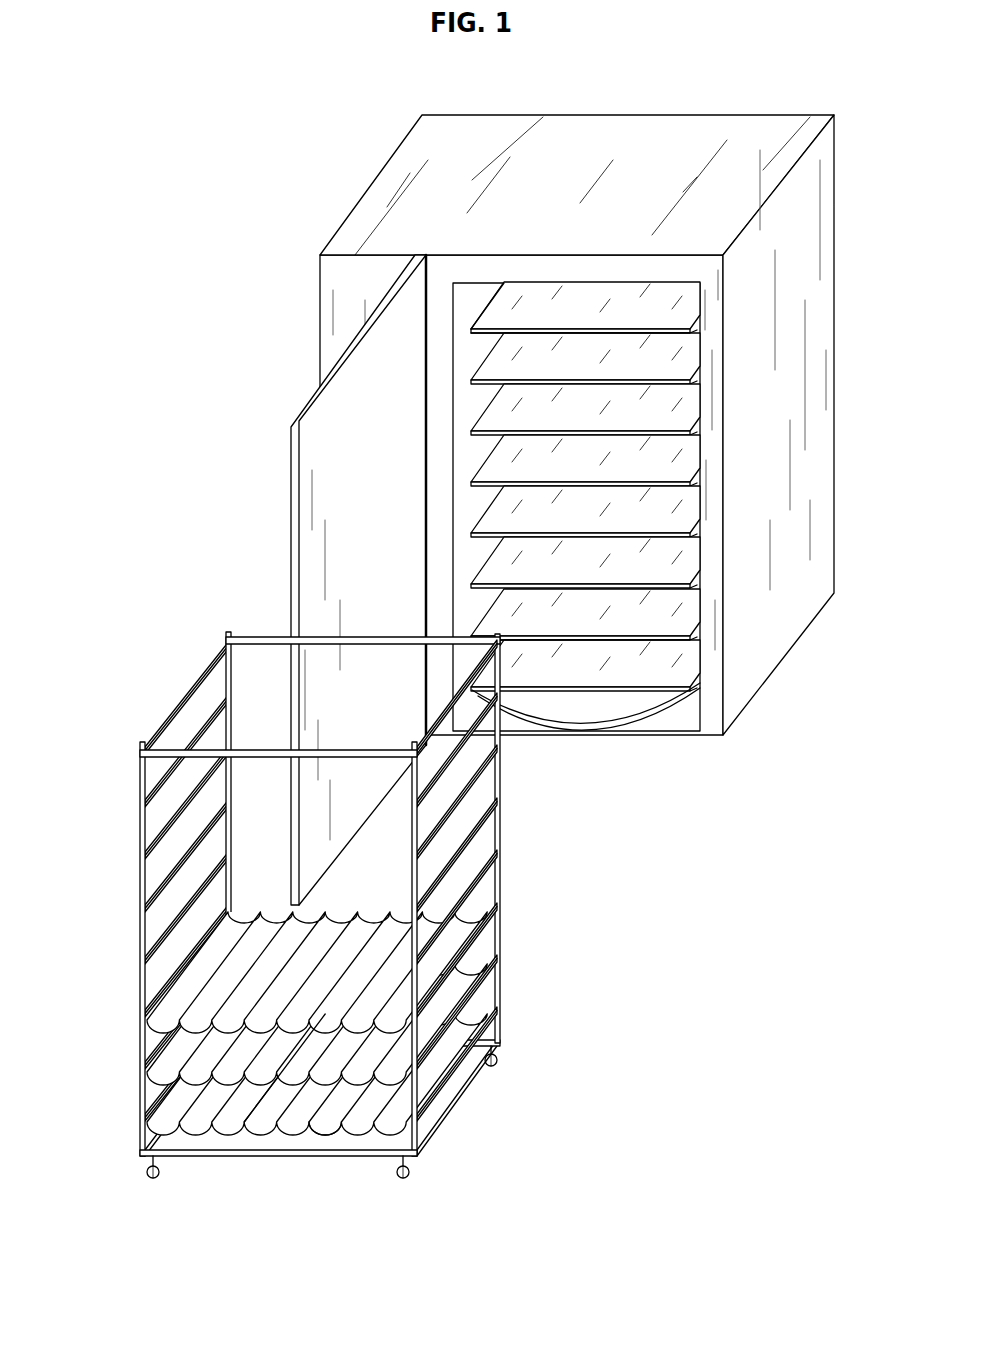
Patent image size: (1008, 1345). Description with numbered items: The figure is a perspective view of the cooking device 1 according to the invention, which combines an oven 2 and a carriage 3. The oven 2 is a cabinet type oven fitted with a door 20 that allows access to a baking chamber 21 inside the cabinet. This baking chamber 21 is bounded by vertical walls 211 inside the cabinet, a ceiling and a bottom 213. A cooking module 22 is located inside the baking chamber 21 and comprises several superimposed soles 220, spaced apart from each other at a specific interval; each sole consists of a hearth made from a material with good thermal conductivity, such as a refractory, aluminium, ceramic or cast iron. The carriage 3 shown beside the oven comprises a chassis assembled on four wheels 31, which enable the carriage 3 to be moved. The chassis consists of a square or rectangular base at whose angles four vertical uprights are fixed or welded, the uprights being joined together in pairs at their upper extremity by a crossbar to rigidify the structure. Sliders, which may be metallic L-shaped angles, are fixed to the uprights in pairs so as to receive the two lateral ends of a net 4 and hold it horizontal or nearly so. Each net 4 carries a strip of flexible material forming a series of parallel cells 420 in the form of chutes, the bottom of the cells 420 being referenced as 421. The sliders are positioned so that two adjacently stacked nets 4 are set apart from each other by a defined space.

The cooking device 1 is at (153, 296).
The oven 2 is at (588, 482).
The door 20 is at (352, 392).
The baking chamber 21 is at (566, 304).
The vertical walls 211 is at (463, 304).
The cooking module 22 is at (659, 618).
The soles 220 is at (648, 490).
The bottom 213 is at (662, 720).
The carriage 3 is at (303, 908).
The wheels 31 is at (500, 1060).
The net 4 is at (165, 1018).
The cells 420 is at (267, 1117).
The bottom of the cells 421 is at (327, 1160).